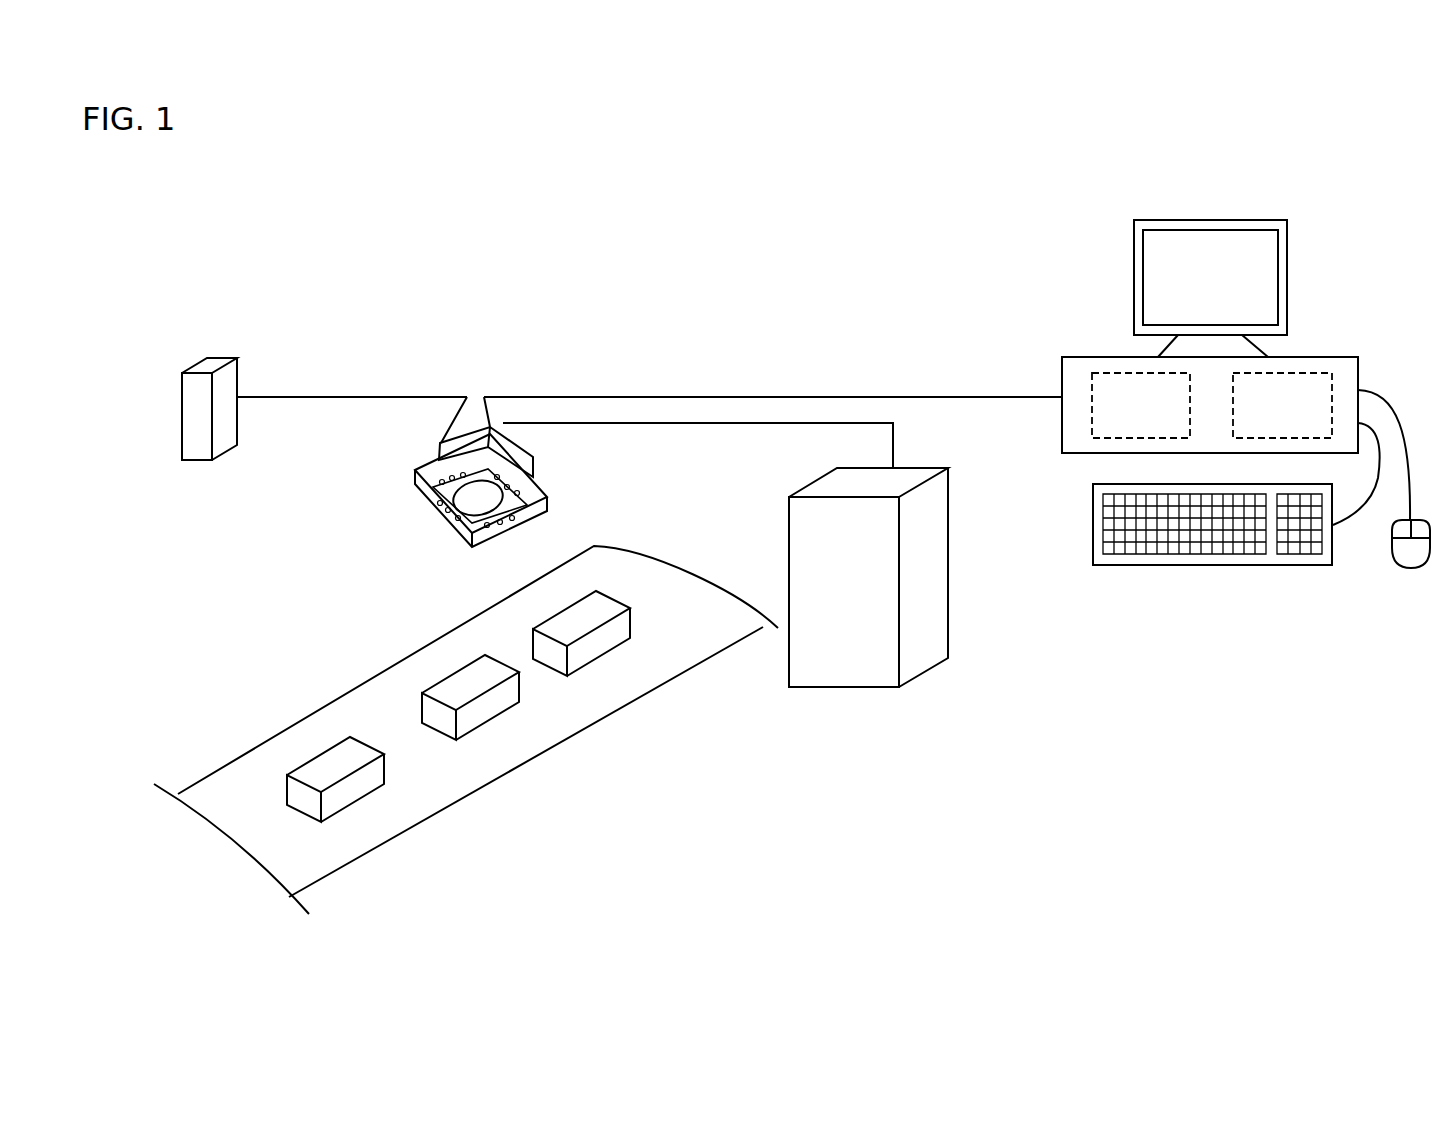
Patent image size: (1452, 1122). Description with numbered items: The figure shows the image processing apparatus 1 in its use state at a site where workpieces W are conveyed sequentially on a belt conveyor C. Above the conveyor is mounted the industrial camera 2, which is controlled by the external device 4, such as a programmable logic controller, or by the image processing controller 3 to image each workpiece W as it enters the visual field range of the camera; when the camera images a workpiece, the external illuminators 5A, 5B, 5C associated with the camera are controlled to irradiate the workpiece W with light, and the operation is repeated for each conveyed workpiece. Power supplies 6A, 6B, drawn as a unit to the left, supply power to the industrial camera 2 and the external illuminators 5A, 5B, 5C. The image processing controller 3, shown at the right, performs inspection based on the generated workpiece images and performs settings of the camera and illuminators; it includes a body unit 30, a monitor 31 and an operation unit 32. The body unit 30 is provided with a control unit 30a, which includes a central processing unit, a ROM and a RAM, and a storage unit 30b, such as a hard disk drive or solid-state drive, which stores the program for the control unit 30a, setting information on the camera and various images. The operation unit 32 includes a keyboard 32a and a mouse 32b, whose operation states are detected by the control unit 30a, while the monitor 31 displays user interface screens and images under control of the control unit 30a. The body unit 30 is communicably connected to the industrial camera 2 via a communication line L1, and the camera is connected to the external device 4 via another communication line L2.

The image processing apparatus 1 is at (890, 238).
The industrial camera 2 is at (438, 450).
The image processing controller 3 is at (1340, 328).
The external device 4 is at (950, 640).
The external illuminator 5A is at (384, 513).
The external illuminator 5B is at (384, 513).
The external illuminator 5C is at (466, 494).
The power supply 6A is at (211, 361).
The power supply 6B is at (218, 358).
The body unit 30 is at (1083, 357).
The control unit 30a is at (1090, 397).
The storage unit 30b is at (1333, 383).
The monitor 31 is at (1133, 260).
The operation unit 32 is at (1442, 668).
The keyboard 32a is at (1307, 565).
The mouse 32b is at (1411, 568).
The workpiece W is at (318, 755).
The belt conveyor C is at (518, 742).
The communication line L1 is at (683, 397).
The communication line L2 is at (710, 425).